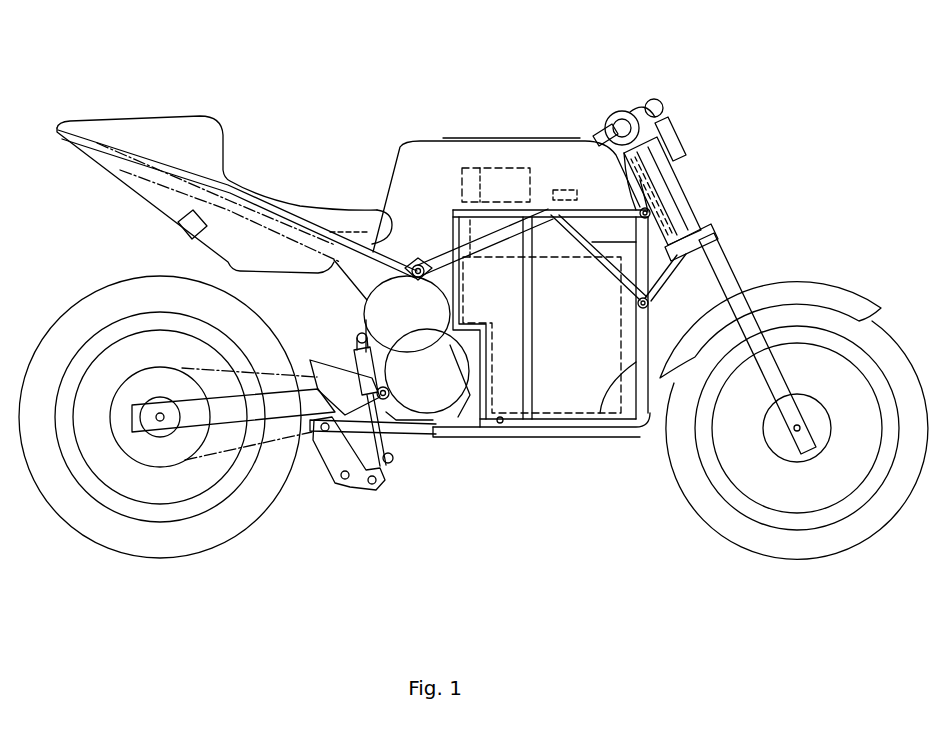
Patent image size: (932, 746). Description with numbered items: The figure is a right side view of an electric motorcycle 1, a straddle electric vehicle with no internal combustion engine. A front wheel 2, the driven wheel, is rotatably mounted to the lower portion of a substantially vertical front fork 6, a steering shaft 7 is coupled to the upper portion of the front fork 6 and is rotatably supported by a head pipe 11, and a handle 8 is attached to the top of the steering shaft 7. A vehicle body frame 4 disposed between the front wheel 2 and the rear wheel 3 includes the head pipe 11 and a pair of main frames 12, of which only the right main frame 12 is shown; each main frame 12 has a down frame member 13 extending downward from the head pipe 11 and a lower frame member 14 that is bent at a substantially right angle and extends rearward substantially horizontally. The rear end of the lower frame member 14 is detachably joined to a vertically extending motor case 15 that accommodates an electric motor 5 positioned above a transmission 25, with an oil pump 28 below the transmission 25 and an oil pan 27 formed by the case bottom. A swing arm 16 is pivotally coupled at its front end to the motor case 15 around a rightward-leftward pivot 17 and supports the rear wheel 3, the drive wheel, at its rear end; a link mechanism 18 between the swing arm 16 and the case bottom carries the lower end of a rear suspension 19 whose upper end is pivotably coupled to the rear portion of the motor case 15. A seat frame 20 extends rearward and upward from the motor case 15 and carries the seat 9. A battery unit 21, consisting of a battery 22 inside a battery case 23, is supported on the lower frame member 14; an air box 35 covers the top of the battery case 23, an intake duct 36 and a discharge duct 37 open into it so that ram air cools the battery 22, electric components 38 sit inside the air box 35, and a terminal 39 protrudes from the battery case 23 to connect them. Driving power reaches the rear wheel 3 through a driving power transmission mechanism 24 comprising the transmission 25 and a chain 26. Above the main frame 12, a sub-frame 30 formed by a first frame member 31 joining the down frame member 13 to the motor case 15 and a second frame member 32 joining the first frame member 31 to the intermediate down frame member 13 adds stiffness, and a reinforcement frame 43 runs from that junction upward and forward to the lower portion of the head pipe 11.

The electric motorcycle 1 is at (797, 100).
The front wheel 2 is at (748, 537).
The rear wheel 3 is at (207, 548).
The vehicle body frame 4 is at (772, 262).
The electric motor 5 is at (372, 312).
The front fork 6 is at (722, 273).
The steering shaft 7 is at (678, 195).
The handle 8 is at (653, 100).
The seat 9 is at (277, 208).
The head pipe 11 is at (668, 185).
The main frame 12 is at (628, 430).
The down frame member 13 is at (597, 430).
The lower frame member 14 is at (520, 428).
The motor case 15 is at (480, 425).
The swing arm 16 is at (245, 425).
The pivot 17 is at (340, 360).
The link mechanism 18 is at (365, 485).
The rear suspension 19 is at (325, 468).
The seat frame 20 is at (170, 190).
The battery unit 21 is at (488, 432).
The battery 22 is at (567, 432).
The battery case 23 is at (473, 220).
The driving power transmission mechanism 24 is at (272, 452).
The transmission 25 is at (440, 390).
The chain 26 is at (223, 420).
The oil pan 27 is at (398, 445).
The oil pump 28 is at (432, 455).
The sub-frame 30 is at (443, 250).
The first frame member 31 is at (505, 220).
The second frame member 32 is at (592, 213).
The air box 35 is at (410, 150).
The intake duct 36 is at (560, 205).
The discharge duct 37 is at (390, 163).
The electric components 38 is at (508, 205).
The terminal 39 is at (495, 168).
The reinforcement frame 43 is at (655, 290).